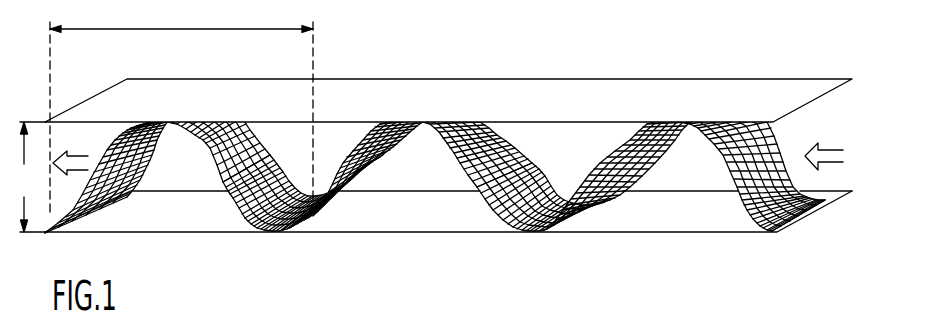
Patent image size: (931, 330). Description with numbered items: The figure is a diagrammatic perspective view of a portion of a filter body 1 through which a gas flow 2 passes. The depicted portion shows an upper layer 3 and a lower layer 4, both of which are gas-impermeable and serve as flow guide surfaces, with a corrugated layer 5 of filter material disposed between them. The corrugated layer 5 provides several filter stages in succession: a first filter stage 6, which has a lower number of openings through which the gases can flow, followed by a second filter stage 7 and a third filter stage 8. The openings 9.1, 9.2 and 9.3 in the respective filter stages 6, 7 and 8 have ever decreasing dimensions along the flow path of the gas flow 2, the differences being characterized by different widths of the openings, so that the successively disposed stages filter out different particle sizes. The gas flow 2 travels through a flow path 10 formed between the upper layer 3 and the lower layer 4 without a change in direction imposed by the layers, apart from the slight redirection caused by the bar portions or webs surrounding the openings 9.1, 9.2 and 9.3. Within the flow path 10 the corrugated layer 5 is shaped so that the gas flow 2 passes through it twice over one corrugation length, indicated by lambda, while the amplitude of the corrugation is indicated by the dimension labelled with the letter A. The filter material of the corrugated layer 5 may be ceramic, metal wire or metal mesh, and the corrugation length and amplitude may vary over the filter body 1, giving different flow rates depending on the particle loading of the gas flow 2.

The filter body 1 is at (0, 0).
The gas flow 2 is at (835, 150).
The upper layer 3 is at (731, 92).
The lower layer 4 is at (660, 233).
The corrugated layer 5 is at (746, 203).
The first filter stage 6 is at (790, 118).
The second filter stage 7 is at (420, 195).
The third filter stage 8 is at (146, 195).
The openings 9.1 is at (788, 208).
The openings 9.2 is at (523, 142).
The openings 9.3 is at (266, 149).
The flow path 10 is at (343, 137).